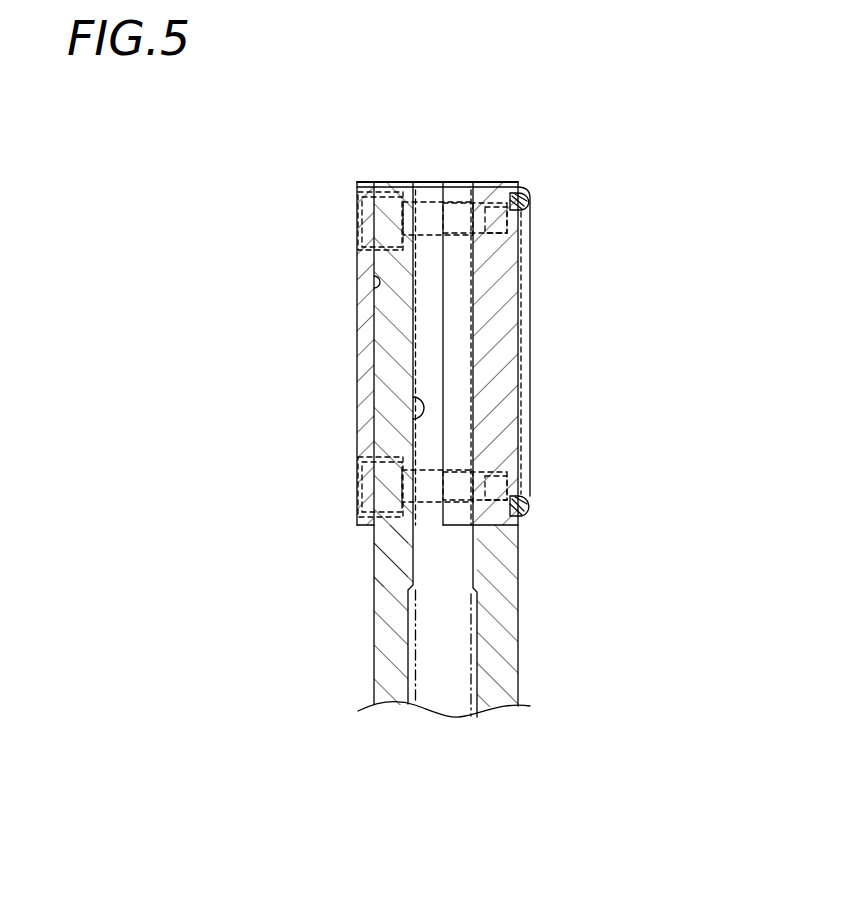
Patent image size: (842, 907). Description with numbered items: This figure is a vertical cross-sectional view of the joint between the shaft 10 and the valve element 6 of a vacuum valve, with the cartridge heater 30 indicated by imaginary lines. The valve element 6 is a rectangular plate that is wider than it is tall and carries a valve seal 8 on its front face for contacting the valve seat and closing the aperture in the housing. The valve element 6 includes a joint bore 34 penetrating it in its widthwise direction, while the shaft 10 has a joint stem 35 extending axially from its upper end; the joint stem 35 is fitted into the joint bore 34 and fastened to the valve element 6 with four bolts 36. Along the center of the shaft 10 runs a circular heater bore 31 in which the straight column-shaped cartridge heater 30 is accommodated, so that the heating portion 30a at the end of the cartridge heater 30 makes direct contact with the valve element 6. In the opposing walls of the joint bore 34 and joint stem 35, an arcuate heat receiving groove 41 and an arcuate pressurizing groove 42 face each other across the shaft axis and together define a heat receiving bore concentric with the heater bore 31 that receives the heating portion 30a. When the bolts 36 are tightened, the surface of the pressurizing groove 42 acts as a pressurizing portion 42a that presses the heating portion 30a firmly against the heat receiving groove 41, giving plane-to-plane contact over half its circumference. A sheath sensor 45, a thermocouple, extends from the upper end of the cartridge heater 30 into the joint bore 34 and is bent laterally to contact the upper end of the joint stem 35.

The sheath sensor 45 is at (393, 182).
The bolts 36 is at (366, 222).
The joint bore 34 is at (374, 281).
The joint stem 35 is at (374, 303).
The pressurizing groove 42 is at (425, 353).
The pressurizing portion 42a is at (420, 419).
The valve element 6 is at (497, 256).
The valve seal 8 is at (525, 308).
The heating portion 30a is at (450, 376).
The heat receiving groove 41 is at (485, 425).
The shaft 10 is at (490, 620).
The heater bore 31 is at (408, 655).
The cartridge heater 30 is at (453, 685).